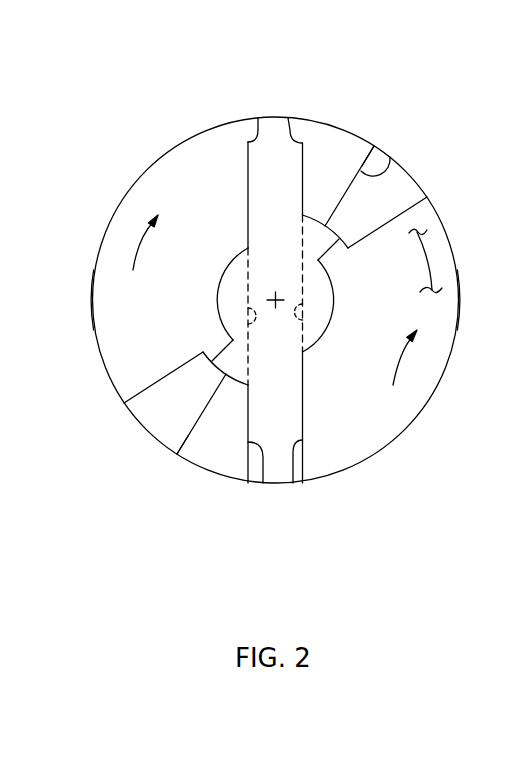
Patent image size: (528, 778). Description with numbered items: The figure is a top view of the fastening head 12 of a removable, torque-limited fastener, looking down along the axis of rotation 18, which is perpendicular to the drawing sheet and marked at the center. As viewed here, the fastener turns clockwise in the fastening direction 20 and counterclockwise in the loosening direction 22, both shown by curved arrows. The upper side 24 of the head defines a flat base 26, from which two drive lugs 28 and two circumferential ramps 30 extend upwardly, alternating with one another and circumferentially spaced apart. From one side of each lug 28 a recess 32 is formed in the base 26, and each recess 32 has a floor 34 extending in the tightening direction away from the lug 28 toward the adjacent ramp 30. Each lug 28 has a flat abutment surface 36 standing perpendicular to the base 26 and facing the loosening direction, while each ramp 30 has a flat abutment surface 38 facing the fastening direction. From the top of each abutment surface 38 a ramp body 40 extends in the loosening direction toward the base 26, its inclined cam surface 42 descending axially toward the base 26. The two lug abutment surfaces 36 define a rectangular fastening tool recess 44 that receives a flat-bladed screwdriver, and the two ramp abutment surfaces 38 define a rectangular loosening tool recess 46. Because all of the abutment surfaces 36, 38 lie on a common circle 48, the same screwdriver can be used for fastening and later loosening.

The fastening head 12 is at (458, 334).
The axis of rotation 18 is at (270, 297).
The fastening direction 20 is at (140, 240).
The loosening direction 22 is at (410, 362).
The upper side 24 is at (280, 135).
The flat base 26 is at (285, 388).
The drive lug 28 is at (390, 158).
The circumferential ramp 30 is at (190, 153).
The recess 32 is at (383, 188).
The floor 34 is at (372, 225).
The lug abutment surface 36 is at (288, 117).
The ramp abutment surface 38 is at (258, 117).
The ramp body 40 is at (152, 333).
The inclined cam surface 42 is at (108, 285).
The fastening tool recess 44 is at (302, 322).
The loosening tool recess 46 is at (248, 325).
The common circle 48 is at (428, 260).